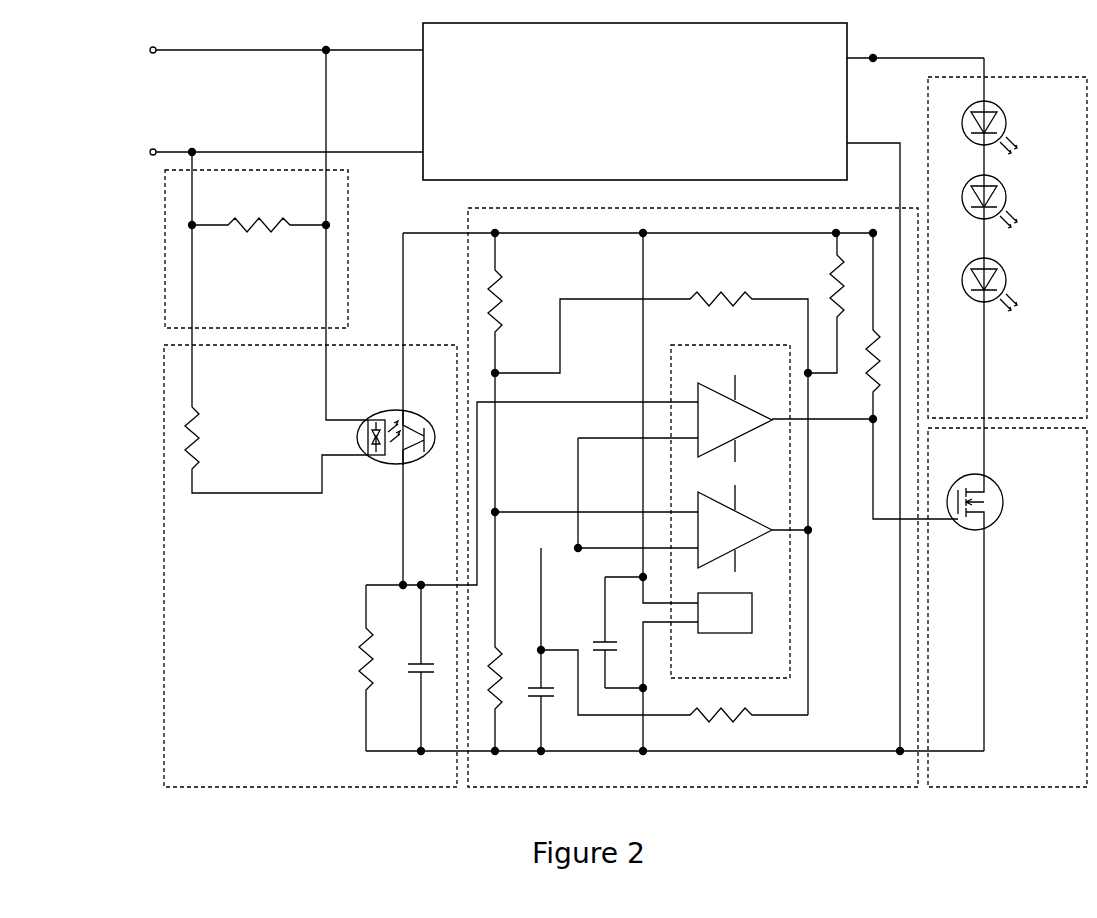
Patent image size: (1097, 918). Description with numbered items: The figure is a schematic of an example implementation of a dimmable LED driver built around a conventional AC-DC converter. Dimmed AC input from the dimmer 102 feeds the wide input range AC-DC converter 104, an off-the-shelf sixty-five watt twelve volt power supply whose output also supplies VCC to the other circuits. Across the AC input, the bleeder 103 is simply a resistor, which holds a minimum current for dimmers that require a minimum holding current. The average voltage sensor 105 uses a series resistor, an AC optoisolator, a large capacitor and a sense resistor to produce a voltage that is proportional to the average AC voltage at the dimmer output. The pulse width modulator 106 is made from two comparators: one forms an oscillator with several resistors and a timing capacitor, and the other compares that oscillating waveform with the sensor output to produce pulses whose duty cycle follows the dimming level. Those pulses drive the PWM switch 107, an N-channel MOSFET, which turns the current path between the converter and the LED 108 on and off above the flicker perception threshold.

The dimmer 102 is at (276, 101).
The bleeder 103 is at (266, 235).
The AC-DC converter module 104 is at (703, 387).
The average voltage sensor 105 is at (431, 497).
The pulse width modulator 106 is at (693, 497).
The PWM switch 107 is at (1007, 607).
The LED 108 is at (1007, 266).